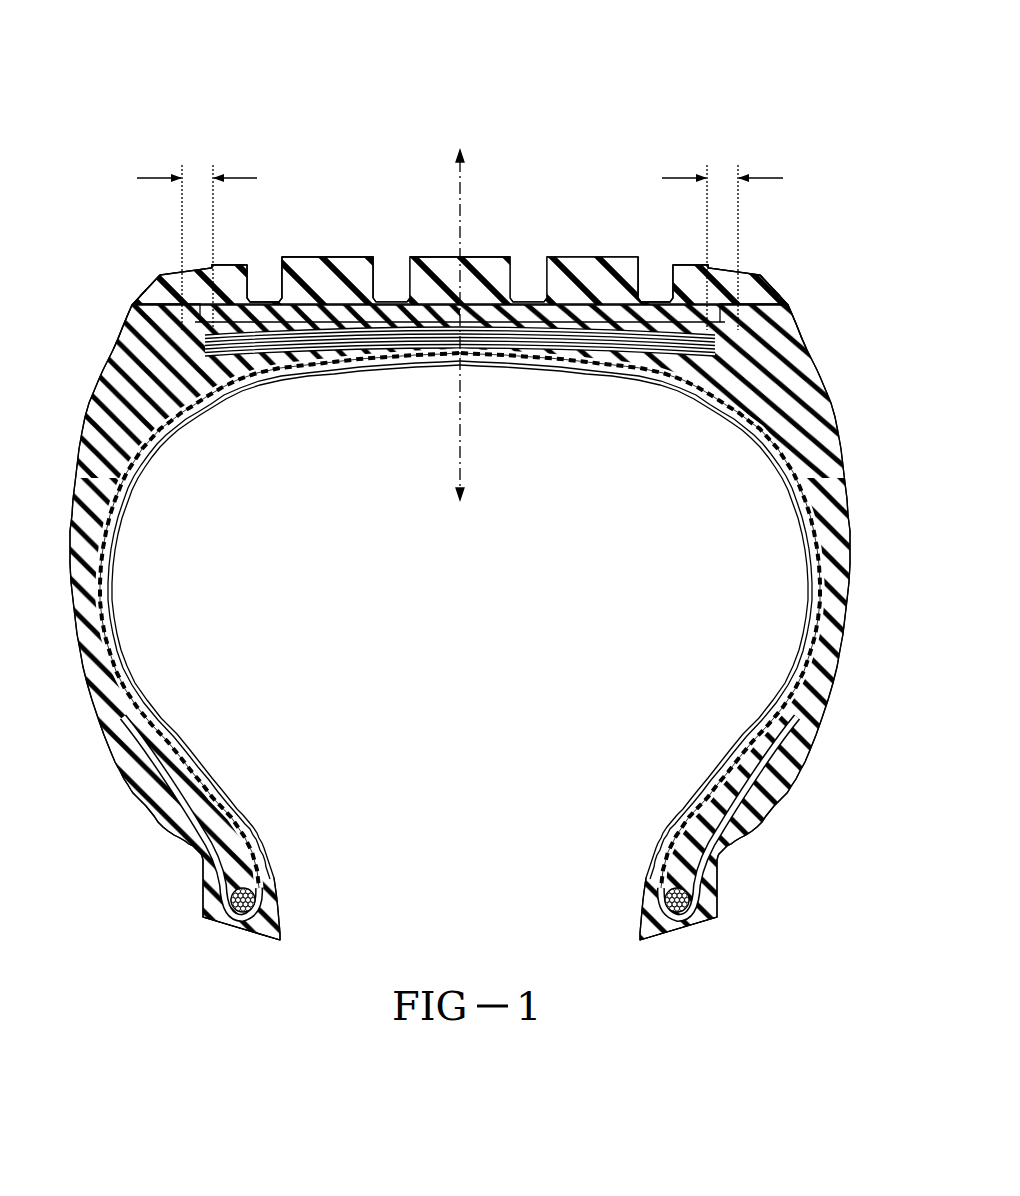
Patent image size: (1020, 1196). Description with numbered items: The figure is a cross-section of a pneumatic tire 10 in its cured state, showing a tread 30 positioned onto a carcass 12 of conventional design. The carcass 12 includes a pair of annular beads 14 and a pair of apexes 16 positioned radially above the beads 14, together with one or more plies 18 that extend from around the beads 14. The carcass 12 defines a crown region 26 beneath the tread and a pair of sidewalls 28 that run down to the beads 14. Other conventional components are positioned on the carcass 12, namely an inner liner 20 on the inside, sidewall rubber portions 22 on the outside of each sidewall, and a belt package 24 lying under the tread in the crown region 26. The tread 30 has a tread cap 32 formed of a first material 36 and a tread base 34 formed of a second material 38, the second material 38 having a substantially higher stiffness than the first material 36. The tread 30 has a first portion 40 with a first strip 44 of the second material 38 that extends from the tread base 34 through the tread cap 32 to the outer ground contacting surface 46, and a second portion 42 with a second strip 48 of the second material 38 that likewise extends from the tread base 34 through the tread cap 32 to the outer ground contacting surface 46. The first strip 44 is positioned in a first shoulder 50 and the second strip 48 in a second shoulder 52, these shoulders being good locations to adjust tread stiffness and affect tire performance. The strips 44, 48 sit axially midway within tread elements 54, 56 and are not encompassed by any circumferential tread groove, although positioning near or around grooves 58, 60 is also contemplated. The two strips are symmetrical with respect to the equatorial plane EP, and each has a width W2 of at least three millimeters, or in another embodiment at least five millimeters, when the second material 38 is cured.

The pneumatic tire 10 is at (120, 124).
The carcass 12 is at (288, 435).
The annular beads 14 is at (233, 907).
The apexes 16 is at (223, 833).
The plies 18 is at (621, 357).
The inner liner 20 is at (763, 447).
The sidewall rubber portions 22 is at (72, 520).
The belt package 24 is at (477, 350).
The crown region 26 is at (418, 383).
The sidewalls 28 is at (120, 296).
The tread 30 is at (556, 208).
The tread cap 32 is at (775, 273).
The tread base 34 is at (780, 347).
The first material 36 is at (327, 260).
The second material 38 is at (150, 345).
The first portion 40 is at (165, 215).
The second portion 42 is at (760, 217).
The first strip 44 is at (187, 270).
The outer ground contacting surface 46 is at (432, 250).
The second strip 48 is at (716, 268).
The first shoulder 50 is at (150, 242).
The second shoulder 52 is at (778, 242).
The tread element 54 is at (135, 268).
The tread element 56 is at (773, 293).
The groove 58 is at (262, 298).
The groove 60 is at (657, 298).
The strip width W2 is at (197, 178).
The equatorial plane EP is at (467, 156).